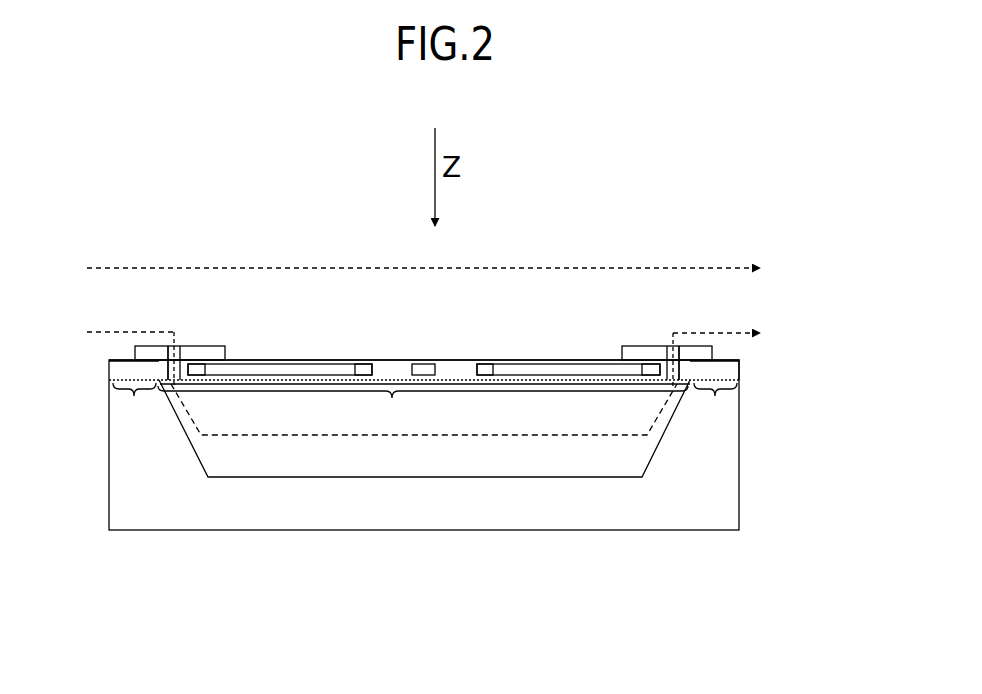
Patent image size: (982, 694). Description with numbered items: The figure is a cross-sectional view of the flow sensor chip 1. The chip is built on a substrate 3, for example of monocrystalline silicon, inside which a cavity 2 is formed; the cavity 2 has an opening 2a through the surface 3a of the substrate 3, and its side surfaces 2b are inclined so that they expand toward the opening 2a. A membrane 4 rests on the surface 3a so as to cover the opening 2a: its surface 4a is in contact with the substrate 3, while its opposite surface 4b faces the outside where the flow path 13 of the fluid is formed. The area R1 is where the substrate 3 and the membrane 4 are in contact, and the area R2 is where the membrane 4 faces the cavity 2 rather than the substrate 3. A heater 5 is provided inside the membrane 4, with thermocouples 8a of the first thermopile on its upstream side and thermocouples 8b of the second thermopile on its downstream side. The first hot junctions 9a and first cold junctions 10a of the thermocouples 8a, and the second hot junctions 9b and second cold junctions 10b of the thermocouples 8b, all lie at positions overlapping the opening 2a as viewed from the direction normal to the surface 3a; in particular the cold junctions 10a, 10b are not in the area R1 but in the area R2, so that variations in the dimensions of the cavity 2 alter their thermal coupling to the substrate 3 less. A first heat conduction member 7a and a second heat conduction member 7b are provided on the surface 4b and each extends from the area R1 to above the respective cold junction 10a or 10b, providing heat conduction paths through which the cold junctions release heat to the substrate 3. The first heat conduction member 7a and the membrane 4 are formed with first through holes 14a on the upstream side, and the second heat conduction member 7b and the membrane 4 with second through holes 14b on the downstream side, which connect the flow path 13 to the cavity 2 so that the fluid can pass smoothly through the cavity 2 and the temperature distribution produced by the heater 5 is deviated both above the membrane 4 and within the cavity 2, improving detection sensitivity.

The flow sensor chip 1 is at (748, 252).
The cavity 2 is at (465, 457).
The opening 2a is at (455, 385).
The side surfaces 2b is at (667, 436).
The substrate 3 is at (741, 488).
The surface 3a is at (725, 376).
The membrane 4 is at (741, 362).
The surface 4a is at (125, 377).
The surface 4b is at (128, 345).
The heater 5 is at (422, 363).
The first heat conduction member 7a is at (155, 345).
The second heat conduction member 7b is at (700, 346).
The thermocouples 8a is at (294, 363).
The thermocouples 8b is at (565, 363).
The first hot junctions 9a is at (365, 363).
The second hot junctions 9b is at (486, 363).
The first cold junctions 10a is at (200, 363).
The second cold junctions 10b is at (650, 363).
The flow path 13 is at (518, 298).
The first through holes 14a is at (188, 346).
The second through holes 14b is at (667, 358).
The area R1 is at (425, 408).
The area R2 is at (423, 409).